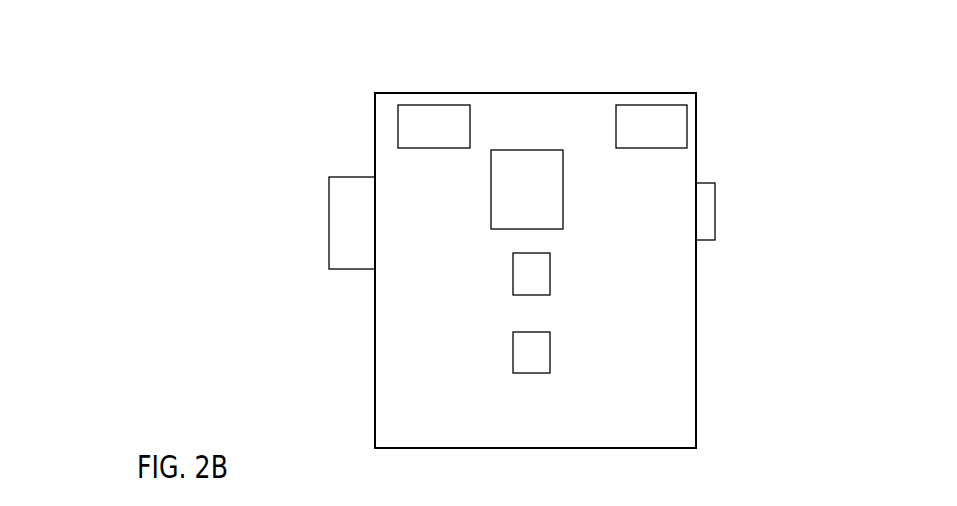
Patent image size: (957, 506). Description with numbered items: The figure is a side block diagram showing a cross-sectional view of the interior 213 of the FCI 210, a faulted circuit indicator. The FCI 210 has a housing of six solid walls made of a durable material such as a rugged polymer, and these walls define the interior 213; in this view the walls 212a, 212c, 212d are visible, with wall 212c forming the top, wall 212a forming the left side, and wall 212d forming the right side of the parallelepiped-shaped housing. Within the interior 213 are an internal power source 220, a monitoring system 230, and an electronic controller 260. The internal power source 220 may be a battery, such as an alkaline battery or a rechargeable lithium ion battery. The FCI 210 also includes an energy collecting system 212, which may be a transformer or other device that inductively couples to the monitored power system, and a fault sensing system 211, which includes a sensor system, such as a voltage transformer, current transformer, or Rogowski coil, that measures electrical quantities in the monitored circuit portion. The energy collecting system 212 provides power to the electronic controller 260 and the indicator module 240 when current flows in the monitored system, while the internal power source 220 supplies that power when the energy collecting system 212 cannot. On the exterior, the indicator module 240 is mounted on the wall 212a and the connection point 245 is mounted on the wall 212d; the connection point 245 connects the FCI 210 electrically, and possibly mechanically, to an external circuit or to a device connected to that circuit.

The FCI 210 is at (750, 34).
The fault sensing system 211 is at (651, 126).
The energy collecting system 212 is at (434, 126).
The wall 212a is at (375, 341).
The wall 212c is at (648, 93).
The wall 212d is at (696, 316).
The interior 213 is at (665, 398).
The internal power source 220 is at (537, 279).
The monitoring system 230 is at (542, 185).
The indicator module 240 is at (343, 204).
The connection point 245 is at (715, 204).
The electronic controller 260 is at (537, 357).